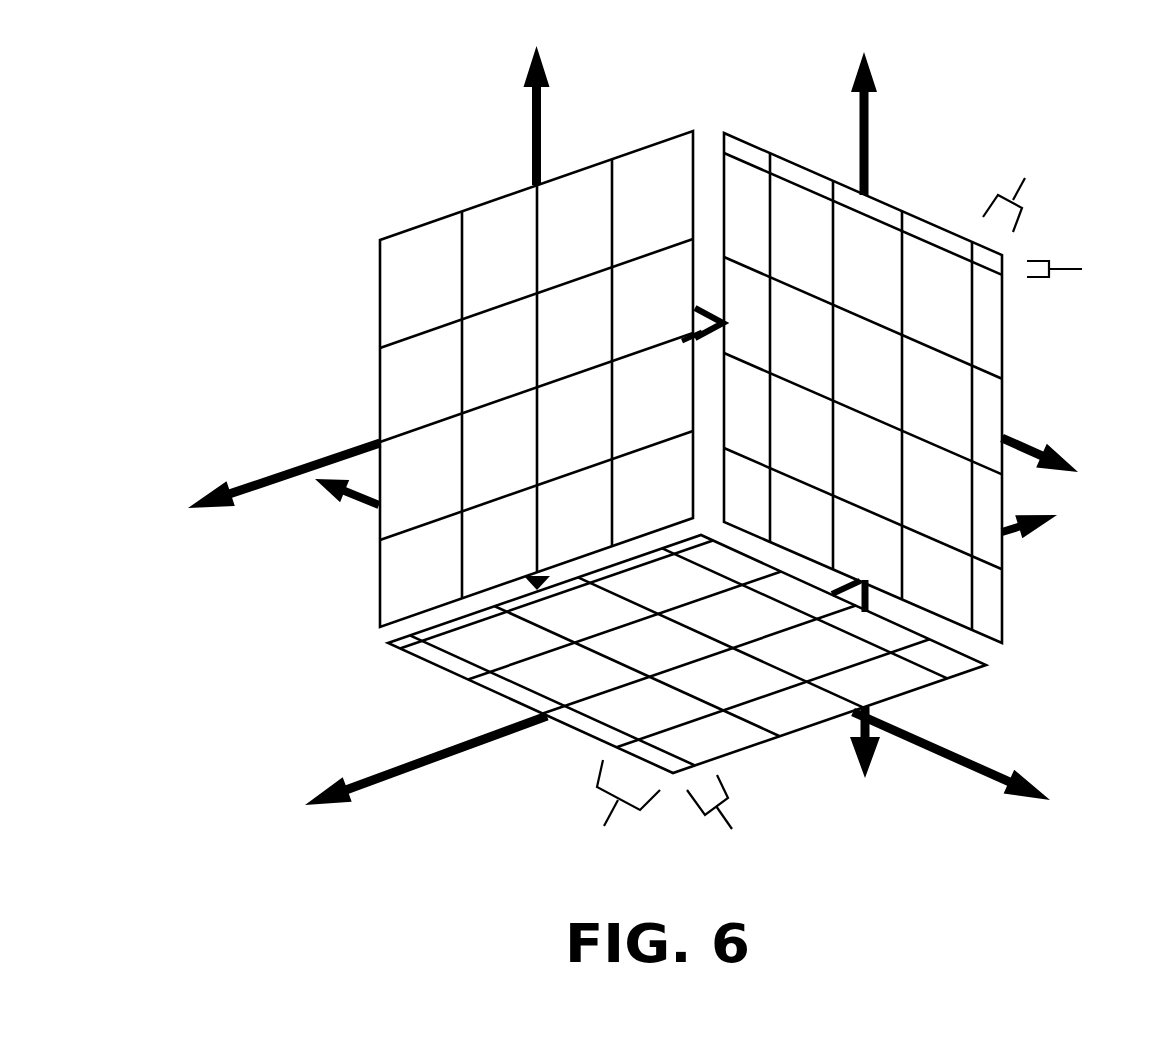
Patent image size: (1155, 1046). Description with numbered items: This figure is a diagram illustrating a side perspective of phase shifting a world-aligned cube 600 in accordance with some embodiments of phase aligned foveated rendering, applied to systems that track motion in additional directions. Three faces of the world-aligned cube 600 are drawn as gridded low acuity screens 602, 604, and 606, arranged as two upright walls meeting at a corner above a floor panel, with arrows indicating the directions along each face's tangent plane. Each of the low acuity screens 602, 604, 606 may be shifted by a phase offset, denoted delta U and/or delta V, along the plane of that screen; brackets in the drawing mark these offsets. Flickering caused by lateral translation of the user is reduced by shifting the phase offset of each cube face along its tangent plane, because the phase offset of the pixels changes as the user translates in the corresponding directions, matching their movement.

The world-aligned cube 600 is at (290, 112).
The low acuity screen 602 is at (380, 248).
The low acuity screen 604 is at (406, 656).
The low acuity screen 606 is at (1003, 373).